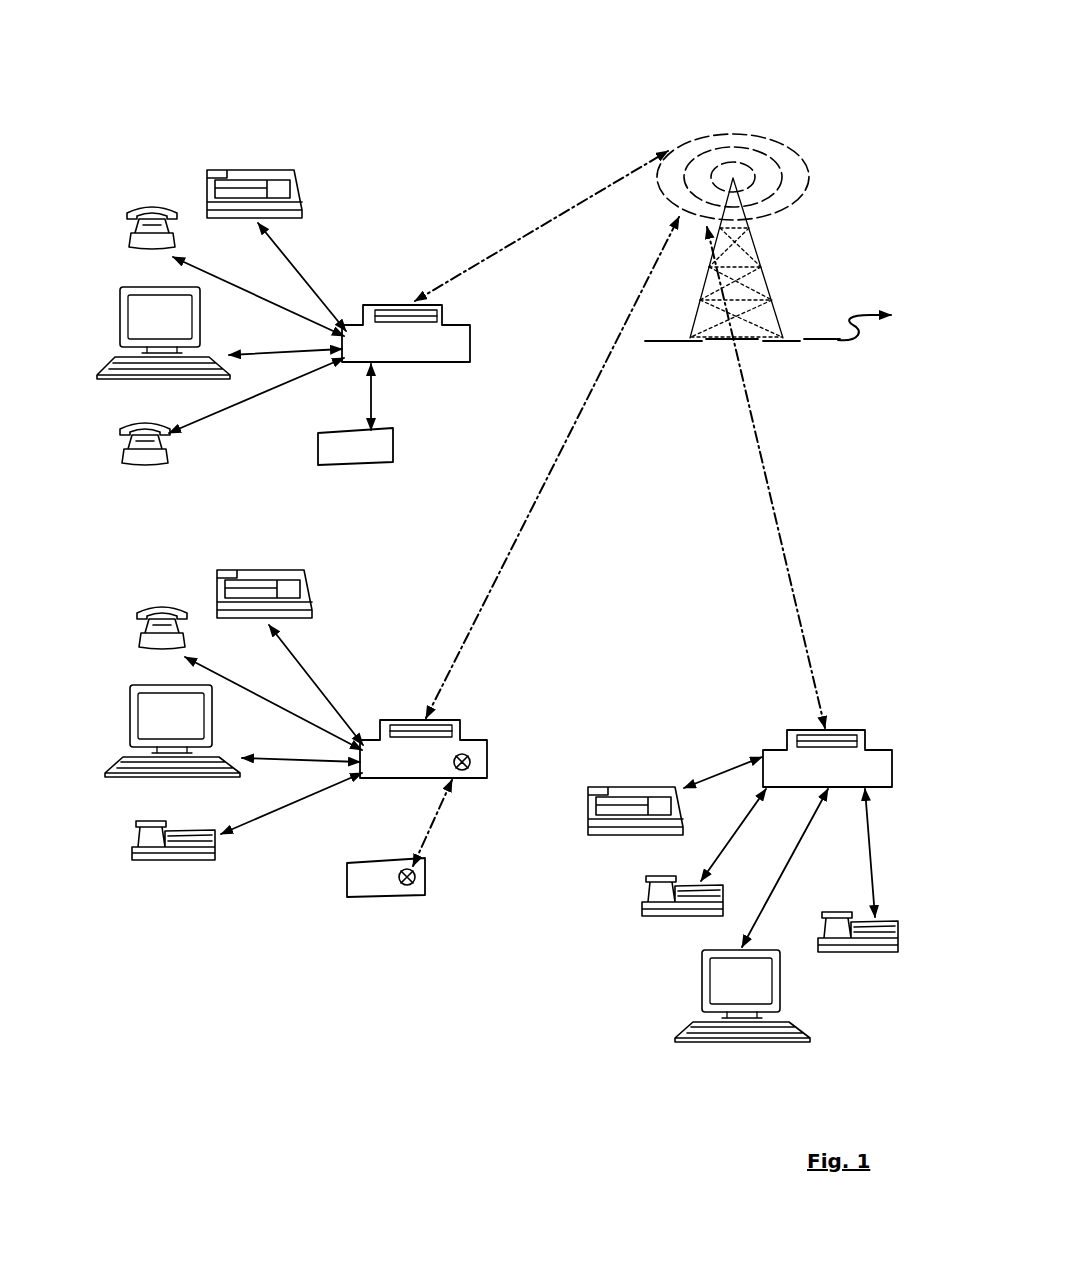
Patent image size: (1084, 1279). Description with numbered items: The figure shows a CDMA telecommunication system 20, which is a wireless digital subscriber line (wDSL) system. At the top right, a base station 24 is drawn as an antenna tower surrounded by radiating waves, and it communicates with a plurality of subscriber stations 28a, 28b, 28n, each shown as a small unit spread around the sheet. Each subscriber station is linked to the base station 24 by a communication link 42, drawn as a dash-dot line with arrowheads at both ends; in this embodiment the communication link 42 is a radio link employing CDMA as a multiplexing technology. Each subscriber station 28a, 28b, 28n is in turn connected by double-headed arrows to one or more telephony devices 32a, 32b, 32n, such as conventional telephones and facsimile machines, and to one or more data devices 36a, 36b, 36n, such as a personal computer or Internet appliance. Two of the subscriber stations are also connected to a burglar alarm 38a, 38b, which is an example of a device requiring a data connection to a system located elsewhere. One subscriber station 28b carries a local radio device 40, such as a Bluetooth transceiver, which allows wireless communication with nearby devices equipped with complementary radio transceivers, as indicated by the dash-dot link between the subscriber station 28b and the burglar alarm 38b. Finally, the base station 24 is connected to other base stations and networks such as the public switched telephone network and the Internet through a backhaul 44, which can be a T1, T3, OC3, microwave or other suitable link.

The CDMA telecommunication system 20 is at (468, 90).
The base station 24 is at (733, 236).
The subscriber station 28a is at (406, 334).
The subscriber station 28b is at (423, 749).
The subscriber station 28n is at (827, 758).
The telephony device 32a is at (208, 317).
The telephony device 32b is at (219, 715).
The telephony device 32n is at (748, 864).
The data device 36a is at (144, 333).
The data device 36b is at (156, 731).
The data device 36n is at (742, 1011).
The burglar alarm 38a is at (384, 446).
The burglar alarm 38b is at (412, 839).
The local radio device 40 is at (479, 757).
The communication link 42 is at (620, 439).
The backhaul 44 is at (768, 343).